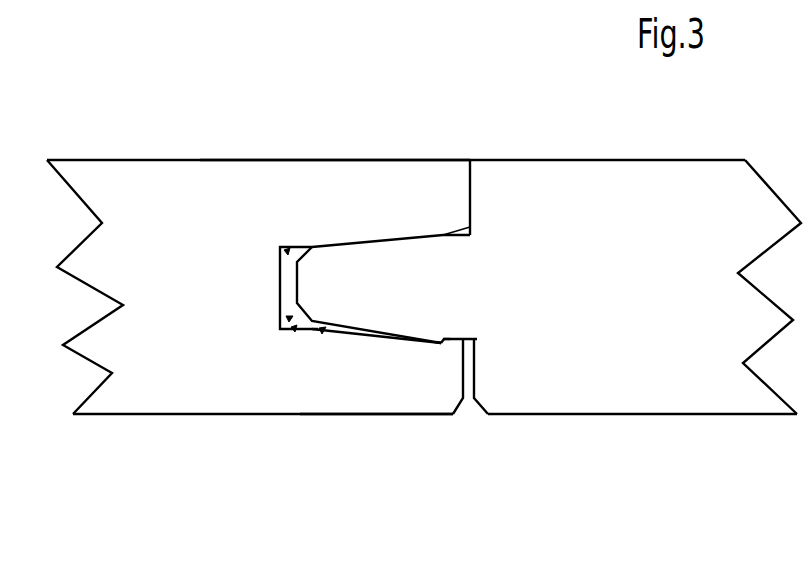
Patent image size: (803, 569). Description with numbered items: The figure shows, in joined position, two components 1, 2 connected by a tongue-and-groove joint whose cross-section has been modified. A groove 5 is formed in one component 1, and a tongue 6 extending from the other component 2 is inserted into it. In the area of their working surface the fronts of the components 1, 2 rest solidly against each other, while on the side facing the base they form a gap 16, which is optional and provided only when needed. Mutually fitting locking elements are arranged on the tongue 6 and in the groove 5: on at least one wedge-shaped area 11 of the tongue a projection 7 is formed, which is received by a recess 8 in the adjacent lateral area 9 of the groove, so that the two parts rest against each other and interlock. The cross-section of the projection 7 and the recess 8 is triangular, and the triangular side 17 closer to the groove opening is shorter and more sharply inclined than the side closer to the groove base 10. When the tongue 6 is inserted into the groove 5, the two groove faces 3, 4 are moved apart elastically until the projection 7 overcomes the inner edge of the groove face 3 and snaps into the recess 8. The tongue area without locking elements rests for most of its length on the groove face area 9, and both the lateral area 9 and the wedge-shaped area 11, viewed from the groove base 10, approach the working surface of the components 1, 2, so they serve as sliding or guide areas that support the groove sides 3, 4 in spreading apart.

The component 1 is at (153, 228).
The component 2 is at (592, 185).
The groove face 3 is at (403, 190).
The groove face 4 is at (417, 393).
The groove 5 is at (291, 317).
The tongue 6 is at (353, 303).
The projection 7 is at (433, 339).
The recess 8 is at (441, 352).
The lateral area of the groove 9 is at (280, 257).
The groove base 10 is at (283, 288).
The wedge-shaped area of the tongue 11 is at (325, 328).
The gap 16 is at (467, 406).
The triangular side 17 is at (447, 339).